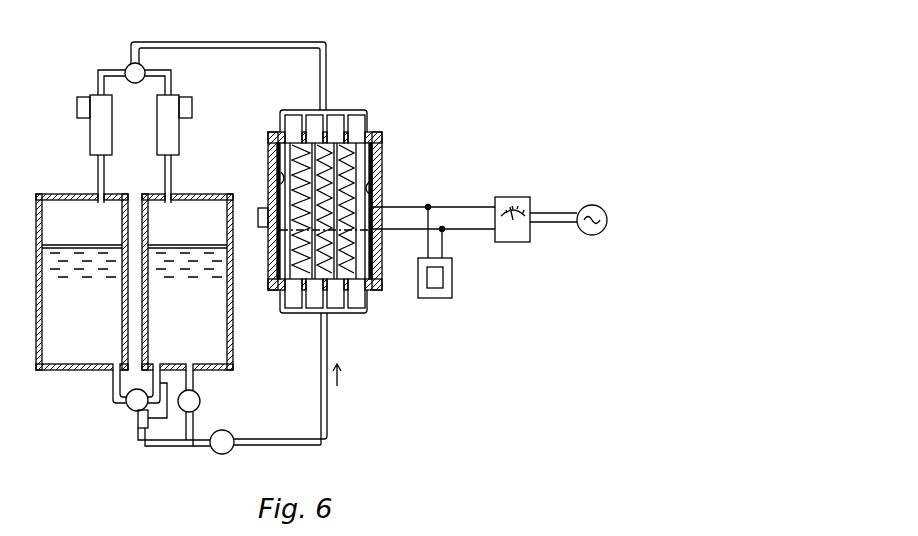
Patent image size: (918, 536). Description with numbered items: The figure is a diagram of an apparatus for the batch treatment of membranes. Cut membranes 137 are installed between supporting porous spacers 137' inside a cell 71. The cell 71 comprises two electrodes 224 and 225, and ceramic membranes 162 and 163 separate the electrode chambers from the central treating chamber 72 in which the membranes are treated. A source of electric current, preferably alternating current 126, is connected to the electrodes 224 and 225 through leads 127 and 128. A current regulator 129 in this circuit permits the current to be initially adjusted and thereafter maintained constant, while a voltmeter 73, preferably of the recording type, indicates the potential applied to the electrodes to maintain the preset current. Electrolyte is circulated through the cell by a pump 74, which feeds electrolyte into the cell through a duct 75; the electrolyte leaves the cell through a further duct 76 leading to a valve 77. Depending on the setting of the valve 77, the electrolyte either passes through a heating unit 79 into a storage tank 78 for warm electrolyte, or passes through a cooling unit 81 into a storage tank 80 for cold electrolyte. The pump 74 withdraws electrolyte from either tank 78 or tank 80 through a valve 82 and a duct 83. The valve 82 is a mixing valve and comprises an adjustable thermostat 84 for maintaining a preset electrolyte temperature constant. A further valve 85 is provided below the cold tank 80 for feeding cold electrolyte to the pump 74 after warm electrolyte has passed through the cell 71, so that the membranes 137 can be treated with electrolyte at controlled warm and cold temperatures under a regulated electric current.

The cell 71 is at (270, 135).
The central treating chamber 72 is at (344, 272).
The voltmeter 73 is at (437, 300).
The pump 74 is at (228, 431).
The duct 75 is at (262, 447).
The further duct 76 is at (223, 42).
The valve 77 is at (126, 66).
The storage tank for warm electrolyte 78 is at (92, 313).
The heating unit 79 is at (90, 129).
The storage tank for cold electrolyte 80 is at (196, 313).
The cooling unit 81 is at (179, 129).
The mixing valve 82 is at (130, 408).
The duct 83 is at (178, 447).
The adjustable thermostat 84 is at (143, 421).
The further valve 85 is at (199, 400).
The source of alternating current 126 is at (585, 205).
The lead 127 is at (443, 206).
The lead 128 is at (470, 231).
The current regulator 129 is at (520, 242).
The cut membranes 137 is at (377, 209).
The supporting porous spacers 137' is at (360, 204).
The ceramic membrane 162 is at (287, 157).
The ceramic membrane 163 is at (375, 165).
The electrode 224 is at (280, 178).
The electrode 225 is at (383, 189).